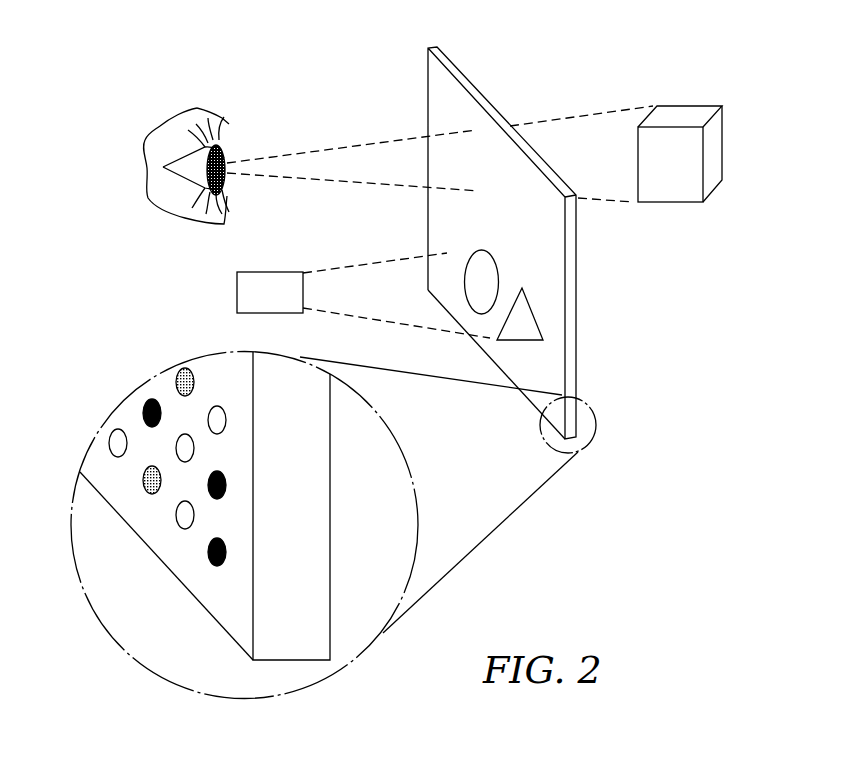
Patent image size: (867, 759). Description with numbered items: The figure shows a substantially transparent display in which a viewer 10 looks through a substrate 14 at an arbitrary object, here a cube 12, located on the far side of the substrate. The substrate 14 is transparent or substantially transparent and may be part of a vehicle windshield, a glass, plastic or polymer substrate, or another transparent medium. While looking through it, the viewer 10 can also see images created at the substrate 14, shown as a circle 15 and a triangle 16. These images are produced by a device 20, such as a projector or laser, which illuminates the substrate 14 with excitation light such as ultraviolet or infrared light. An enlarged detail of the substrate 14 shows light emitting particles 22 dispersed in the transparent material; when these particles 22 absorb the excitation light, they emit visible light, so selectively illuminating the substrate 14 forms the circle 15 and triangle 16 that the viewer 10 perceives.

The viewer 10 is at (230, 153).
The cube 12 is at (683, 113).
The substrate 14 is at (492, 117).
The circle 15 is at (468, 277).
The triangle 16 is at (503, 322).
The device 20 is at (270, 272).
The light emitting particles 22 is at (177, 380).